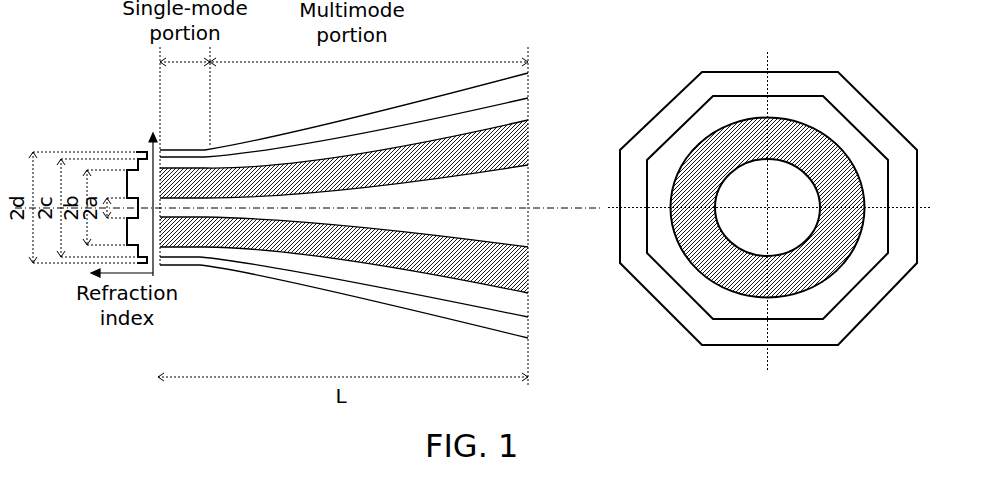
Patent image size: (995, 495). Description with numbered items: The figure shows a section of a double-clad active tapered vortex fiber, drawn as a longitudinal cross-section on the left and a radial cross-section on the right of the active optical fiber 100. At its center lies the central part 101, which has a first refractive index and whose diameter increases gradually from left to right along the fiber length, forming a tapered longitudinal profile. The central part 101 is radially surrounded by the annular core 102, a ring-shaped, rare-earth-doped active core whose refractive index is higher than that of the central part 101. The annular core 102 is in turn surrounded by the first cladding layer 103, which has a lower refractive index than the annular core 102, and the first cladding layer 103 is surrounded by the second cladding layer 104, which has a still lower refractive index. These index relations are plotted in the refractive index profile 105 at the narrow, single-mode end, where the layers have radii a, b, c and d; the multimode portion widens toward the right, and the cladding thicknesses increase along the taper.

The active optical fiber 100 is at (472, 197).
The central part 101 is at (525, 229).
The annular core 102 is at (525, 268).
The first cladding layer 103 is at (525, 305).
The second cladding layer 104 is at (460, 315).
The refractive index profile 105 is at (136, 153).